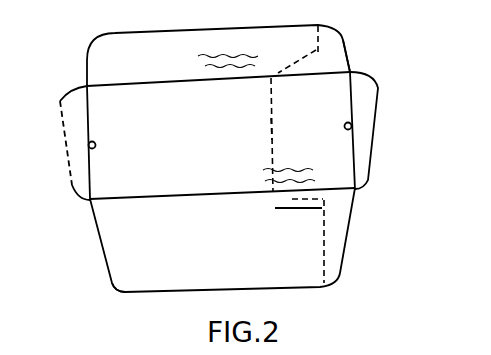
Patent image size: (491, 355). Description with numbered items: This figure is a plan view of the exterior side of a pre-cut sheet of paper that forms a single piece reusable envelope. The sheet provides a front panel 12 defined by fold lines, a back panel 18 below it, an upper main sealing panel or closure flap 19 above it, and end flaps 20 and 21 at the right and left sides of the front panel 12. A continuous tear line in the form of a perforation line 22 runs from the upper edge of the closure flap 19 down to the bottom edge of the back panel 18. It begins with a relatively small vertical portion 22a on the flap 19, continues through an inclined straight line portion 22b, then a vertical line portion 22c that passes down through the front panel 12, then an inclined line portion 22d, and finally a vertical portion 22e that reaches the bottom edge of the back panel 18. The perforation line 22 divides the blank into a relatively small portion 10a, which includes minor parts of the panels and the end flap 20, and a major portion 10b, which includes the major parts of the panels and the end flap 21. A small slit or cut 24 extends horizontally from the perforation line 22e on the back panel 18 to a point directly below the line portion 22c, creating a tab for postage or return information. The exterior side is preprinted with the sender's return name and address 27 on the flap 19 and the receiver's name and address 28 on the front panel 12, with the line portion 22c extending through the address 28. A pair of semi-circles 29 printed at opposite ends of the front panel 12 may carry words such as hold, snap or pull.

The relatively small portion 10a is at (350, 61).
The major portion 10b is at (81, 290).
The front panel 12 is at (153, 147).
The back panel 18 is at (158, 257).
The upper main sealing panel or closure flap 19 is at (143, 74).
The end flap 20 is at (372, 110).
The end flap 21 is at (68, 106).
The perforation line 22 is at (270, 100).
The vertical portion 22a is at (322, 40).
The straight line portion 22b is at (295, 64).
The vertical line portion 22c is at (270, 124).
The line portion 22d is at (300, 197).
The vertical portion 22e is at (327, 262).
The slit or cut 24 is at (300, 212).
The return name and address 27 is at (267, 57).
The name and address 28 is at (262, 165).
The semi-circles 29 is at (89, 147).